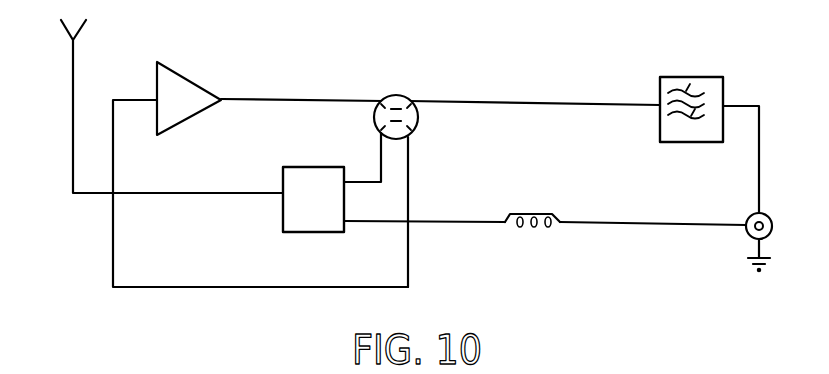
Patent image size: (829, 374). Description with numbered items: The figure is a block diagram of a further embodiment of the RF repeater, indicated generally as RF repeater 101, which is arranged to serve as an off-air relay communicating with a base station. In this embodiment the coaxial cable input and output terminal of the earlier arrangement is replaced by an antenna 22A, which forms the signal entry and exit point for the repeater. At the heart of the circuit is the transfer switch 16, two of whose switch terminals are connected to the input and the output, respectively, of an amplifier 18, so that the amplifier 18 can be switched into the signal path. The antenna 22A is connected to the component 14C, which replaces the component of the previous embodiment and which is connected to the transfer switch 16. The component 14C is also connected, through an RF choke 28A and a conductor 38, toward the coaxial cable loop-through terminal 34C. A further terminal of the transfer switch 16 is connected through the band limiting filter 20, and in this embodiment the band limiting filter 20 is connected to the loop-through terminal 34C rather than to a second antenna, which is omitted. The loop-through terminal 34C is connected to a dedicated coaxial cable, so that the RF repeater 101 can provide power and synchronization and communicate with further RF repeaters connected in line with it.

The antenna 22A is at (73, 125).
The amplifier 18 is at (188, 118).
The transfer switch 16 is at (418, 120).
The component 14C is at (313, 199).
The RF repeater 101 is at (105, 243).
The RF choke 28A is at (530, 230).
The conductor 38 is at (633, 226).
The coaxial cable input and output terminal 34C is at (757, 214).
The band limiting filter 20 is at (660, 128).